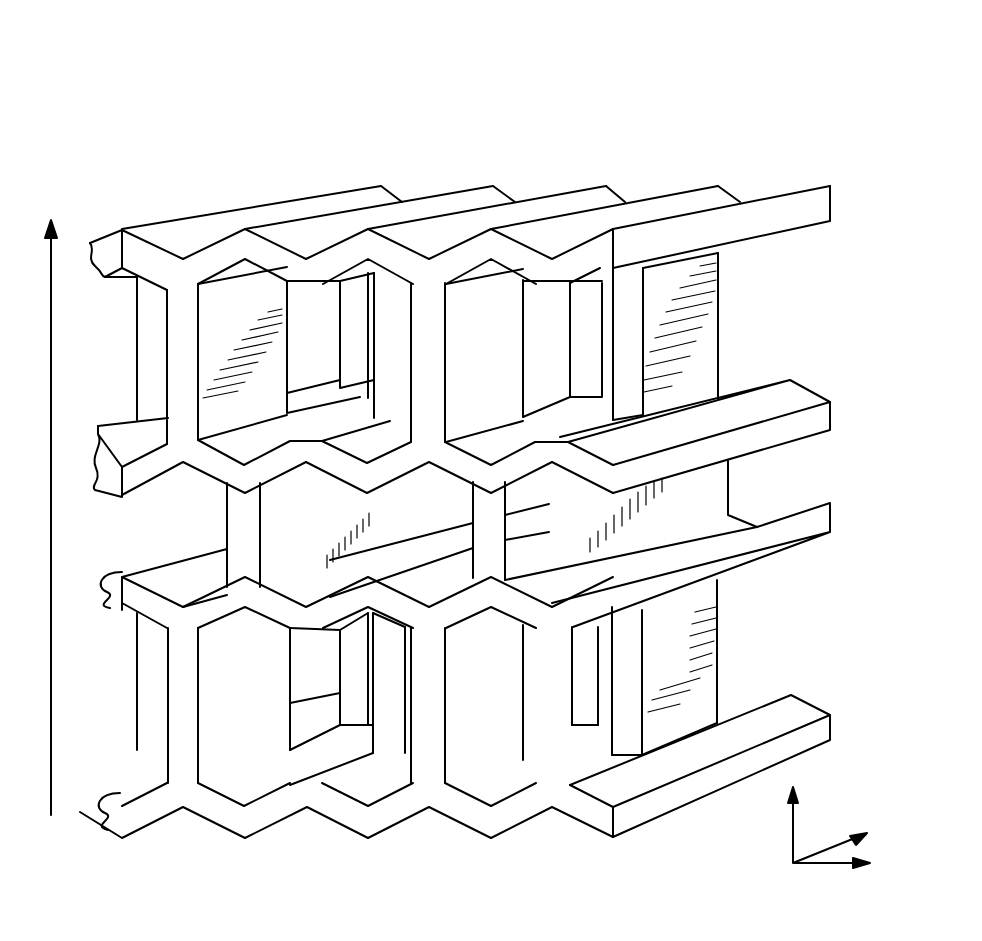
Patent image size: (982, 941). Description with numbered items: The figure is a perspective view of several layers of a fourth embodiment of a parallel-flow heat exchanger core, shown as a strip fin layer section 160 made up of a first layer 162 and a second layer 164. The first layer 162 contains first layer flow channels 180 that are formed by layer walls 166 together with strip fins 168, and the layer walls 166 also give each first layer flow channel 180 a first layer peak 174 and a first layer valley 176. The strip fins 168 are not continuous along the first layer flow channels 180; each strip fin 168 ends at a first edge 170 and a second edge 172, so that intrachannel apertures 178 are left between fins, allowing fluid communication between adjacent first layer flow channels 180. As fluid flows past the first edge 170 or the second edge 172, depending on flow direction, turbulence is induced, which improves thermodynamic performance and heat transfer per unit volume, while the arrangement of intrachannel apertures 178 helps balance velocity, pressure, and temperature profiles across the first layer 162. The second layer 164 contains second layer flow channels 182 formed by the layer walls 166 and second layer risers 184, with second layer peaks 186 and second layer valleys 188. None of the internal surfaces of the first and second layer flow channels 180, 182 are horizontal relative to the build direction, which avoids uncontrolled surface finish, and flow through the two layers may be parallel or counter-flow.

The strip fin layer section 160 is at (180, 92).
The first layer 162 is at (796, 314).
The second layer 164 is at (804, 472).
The layer wall 166 is at (833, 412).
The strip fin 168 is at (430, 342).
The first edge 170 is at (630, 320).
The second edge 172 is at (718, 297).
The first layer peak 174 is at (563, 437).
The first layer valley 176 is at (496, 452).
The intrachannel aperture 178 is at (318, 327).
The first layer flow channel 180 is at (227, 400).
The second layer flow channel 182 is at (327, 537).
The second layer riser 184 is at (481, 500).
The second layer peak 186 is at (392, 570).
The second layer valley 188 is at (550, 606).